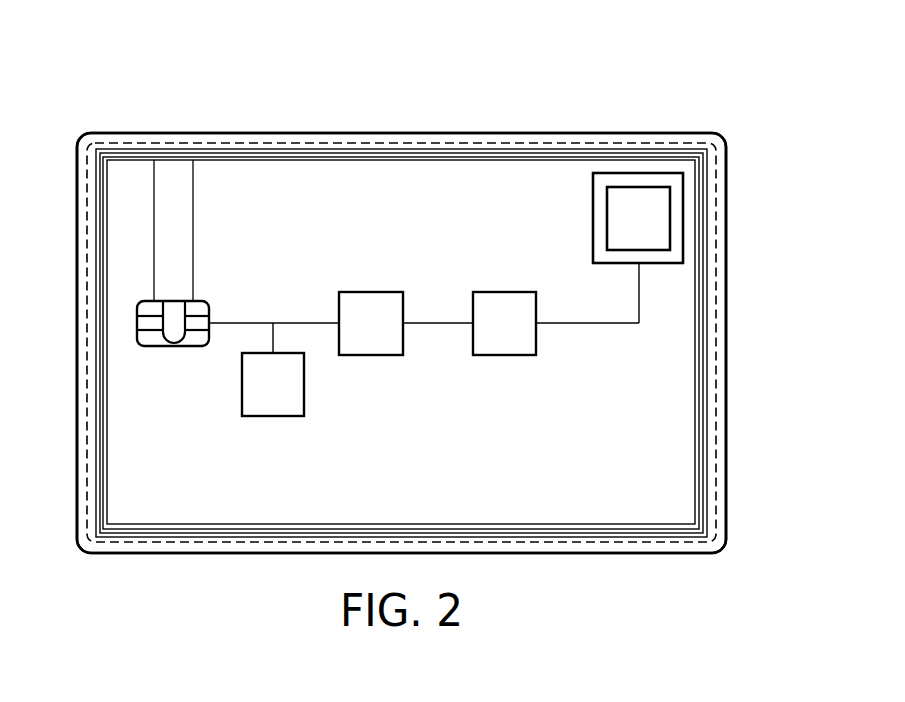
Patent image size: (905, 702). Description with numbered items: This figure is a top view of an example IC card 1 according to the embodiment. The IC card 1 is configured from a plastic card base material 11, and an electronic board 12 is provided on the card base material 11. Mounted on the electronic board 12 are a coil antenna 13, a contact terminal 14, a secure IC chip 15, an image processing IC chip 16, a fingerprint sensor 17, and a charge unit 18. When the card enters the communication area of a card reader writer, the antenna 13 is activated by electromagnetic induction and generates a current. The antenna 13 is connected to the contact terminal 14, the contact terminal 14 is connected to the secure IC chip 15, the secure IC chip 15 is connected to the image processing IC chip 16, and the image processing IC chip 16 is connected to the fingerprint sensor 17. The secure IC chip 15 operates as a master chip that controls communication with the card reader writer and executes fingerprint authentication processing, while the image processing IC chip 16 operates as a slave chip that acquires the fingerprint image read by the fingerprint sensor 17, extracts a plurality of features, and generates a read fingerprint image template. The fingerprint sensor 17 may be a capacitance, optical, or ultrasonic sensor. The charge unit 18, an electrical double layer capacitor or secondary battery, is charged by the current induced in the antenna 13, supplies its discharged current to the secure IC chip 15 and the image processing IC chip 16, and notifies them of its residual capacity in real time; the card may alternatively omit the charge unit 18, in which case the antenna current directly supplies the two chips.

The IC card 1 is at (708, 114).
The card base material 11 is at (727, 403).
The electronic board 12 is at (718, 266).
The antenna 13 is at (705, 326).
The contact terminal 14 is at (176, 347).
The secure IC chip 15 is at (370, 291).
The image processing IC chip 16 is at (505, 291).
The fingerprint sensor 17 is at (663, 220).
The charge unit 18 is at (273, 417).